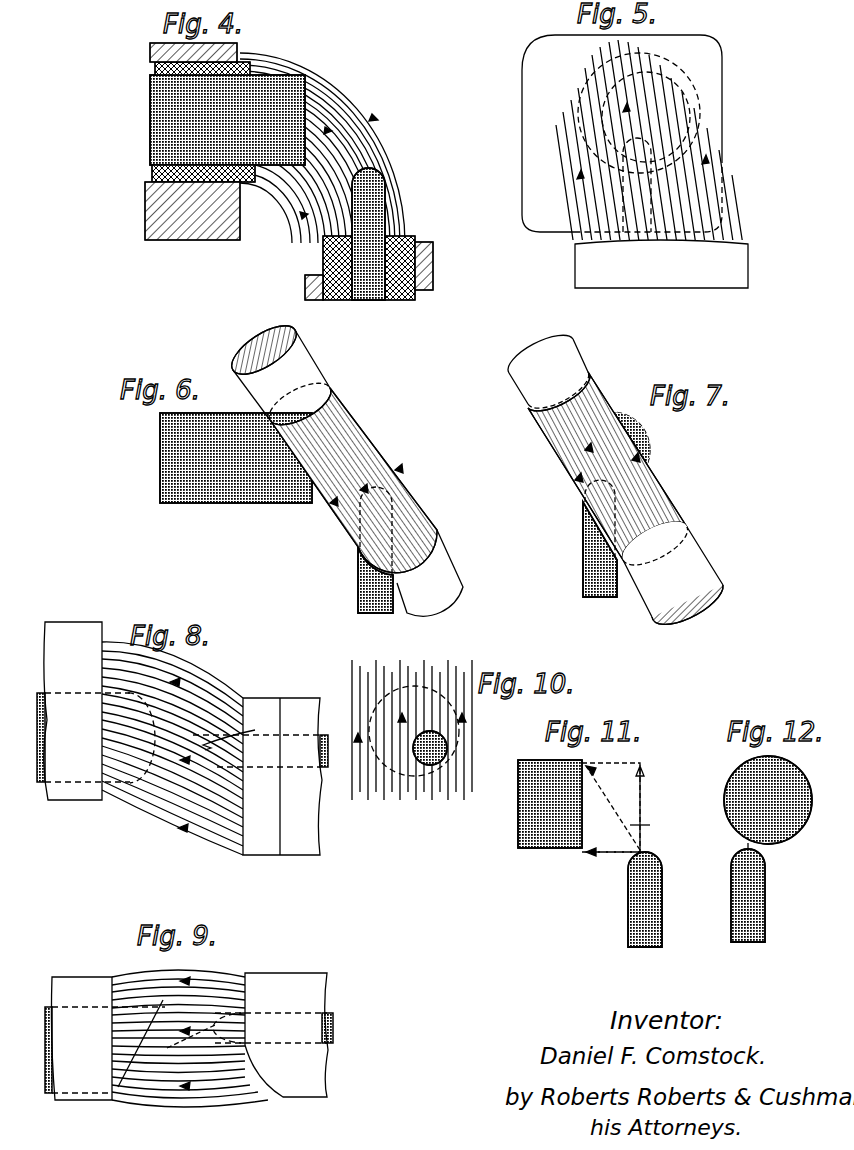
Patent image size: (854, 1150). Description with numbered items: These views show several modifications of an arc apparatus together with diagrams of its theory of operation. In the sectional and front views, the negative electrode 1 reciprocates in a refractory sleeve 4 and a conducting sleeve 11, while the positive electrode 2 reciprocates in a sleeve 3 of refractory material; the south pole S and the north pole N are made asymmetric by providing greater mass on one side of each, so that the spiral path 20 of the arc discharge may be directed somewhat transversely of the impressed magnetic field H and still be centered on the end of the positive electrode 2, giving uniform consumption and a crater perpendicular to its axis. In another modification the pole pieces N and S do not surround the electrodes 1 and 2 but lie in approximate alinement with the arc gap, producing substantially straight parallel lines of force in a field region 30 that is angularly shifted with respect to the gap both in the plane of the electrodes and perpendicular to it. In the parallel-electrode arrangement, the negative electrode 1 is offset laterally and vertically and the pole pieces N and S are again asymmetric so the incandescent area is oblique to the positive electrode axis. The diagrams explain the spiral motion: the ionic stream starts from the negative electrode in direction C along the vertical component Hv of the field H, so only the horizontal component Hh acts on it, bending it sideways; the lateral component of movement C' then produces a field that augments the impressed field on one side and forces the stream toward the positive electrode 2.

In FIG. 4, the negative electrode 1 is at (388, 228).
In FIG. 5, the negative electrode 1 is at (620, 202).
In FIG. 6, the negative electrode 1 is at (358, 573).
In FIG. 7, the negative electrode 1 is at (583, 566).
In FIG. 8, the negative electrode 1 is at (330, 760).
In FIG. 9, the negative electrode 1 is at (333, 1018).
In FIG. 10, the negative electrode 1 is at (448, 748).
In FIG. 11, the negative electrode 1 is at (628, 895).
In FIG. 12, the negative electrode 1 is at (731, 885).
In FIG. 4, the positive electrode 2 is at (150, 108).
In FIG. 5, the positive electrode 2 is at (700, 108).
In FIG. 6, the positive electrode 2 is at (160, 433).
In FIG. 7, the positive electrode 2 is at (648, 445).
In FIG. 8, the positive electrode 2 is at (44, 790).
In FIG. 9, the positive electrode 2 is at (54, 1097).
In FIG. 10, the positive electrode 2 is at (372, 713).
In FIG. 11, the positive electrode 2 is at (518, 800).
In FIG. 12, the positive electrode 2 is at (726, 795).
In FIG. 4, the sleeve of refractory material 3 is at (155, 70).
In FIG. 5, the sleeve of refractory material 3 is at (712, 122).
In FIG. 4, the refractory sleeve 4 is at (322, 256).
In FIG. 5, the refractory sleeve 4 is at (576, 241).
In FIG. 4, the conducting sleeve 11 is at (425, 266).
In FIG. 4, the spiral path 20 is at (365, 157).
In FIG. 5, the spiral path 20 is at (640, 133).
In FIG. 6, the field region 30 is at (326, 465).
In FIG. 7, the field region 30 is at (577, 492).
In FIG. 4, the south pole S is at (148, 198).
In FIG. 5, the south pole S is at (528, 152).
In FIG. 6, the south pole S is at (310, 368).
In FIG. 7, the south pole S is at (567, 365).
In FIG. 8, the south pole S is at (73, 711).
In FIG. 9, the south pole S is at (81, 1038).
In FIG. 4, the north pole N is at (310, 290).
In FIG. 5, the north pole N is at (661, 264).
In FIG. 6, the north pole N is at (452, 573).
In FIG. 7, the north pole N is at (702, 556).
In FIG. 8, the north pole N is at (282, 776).
In FIG. 9, the north pole N is at (286, 1035).
In FIG. 4, the impressed magnetic field H is at (375, 118).
In FIG. 5, the impressed magnetic field H is at (728, 212).
In FIG. 6, the impressed magnetic field H is at (413, 505).
In FIG. 7, the impressed magnetic field H is at (660, 503).
In FIG. 8, the impressed magnetic field H is at (210, 690).
In FIG. 9, the impressed magnetic field H is at (222, 1100).
In FIG. 10, the impressed magnetic field H is at (447, 718).
In FIG. 11, the impressed magnetic field H is at (611, 807).
In FIG. 11, the vertical component of the impressed field Hv is at (656, 809).
In FIG. 11, the horizontal component of the impressed field Hh is at (613, 869).
In FIG. 8, the direction of the ionic stream C is at (236, 732).
In FIG. 9, the direction of the ionic stream C is at (149, 1043).
In FIG. 10, the direction of the ionic stream C is at (398, 789).
In FIG. 11, the direction of the ionic stream C is at (654, 837).
In FIG. 12, the direction of the ionic stream C is at (729, 839).
In FIG. 12, the lateral component of movement C' is at (724, 767).